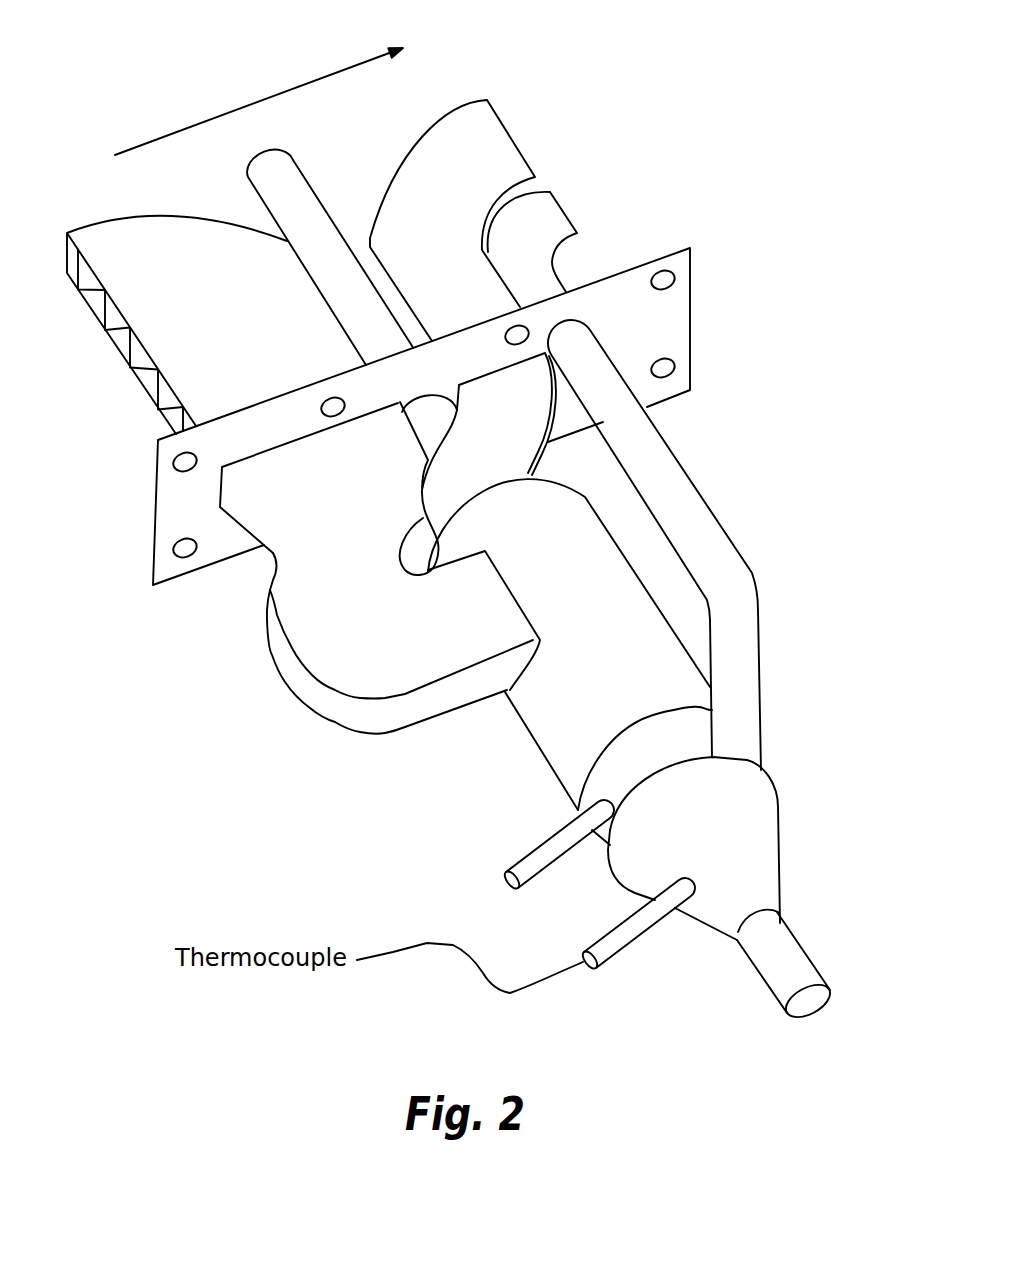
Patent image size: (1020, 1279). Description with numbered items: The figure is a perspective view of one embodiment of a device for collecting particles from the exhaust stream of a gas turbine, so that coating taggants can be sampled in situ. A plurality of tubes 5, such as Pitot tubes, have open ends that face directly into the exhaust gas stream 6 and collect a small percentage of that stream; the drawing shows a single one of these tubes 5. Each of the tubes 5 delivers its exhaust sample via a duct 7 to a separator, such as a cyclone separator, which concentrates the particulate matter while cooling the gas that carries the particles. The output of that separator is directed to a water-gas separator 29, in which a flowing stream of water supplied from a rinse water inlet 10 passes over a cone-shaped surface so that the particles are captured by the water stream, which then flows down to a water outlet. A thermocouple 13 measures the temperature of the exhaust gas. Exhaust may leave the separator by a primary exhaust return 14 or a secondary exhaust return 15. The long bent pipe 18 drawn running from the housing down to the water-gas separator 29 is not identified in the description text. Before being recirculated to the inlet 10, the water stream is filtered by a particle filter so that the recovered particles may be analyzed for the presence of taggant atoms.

The tubes 5 is at (147, 438).
The exhaust gas stream 6 is at (259, 101).
The duct 7 is at (310, 606).
The rinse water inlet 10 is at (503, 878).
The thermocouple 13 is at (302, 167).
The primary exhaust return 14 is at (512, 130).
The secondary exhaust return 15 is at (562, 205).
The outlet pipe 18 is at (632, 567).
The water-gas separator 29 is at (788, 823).